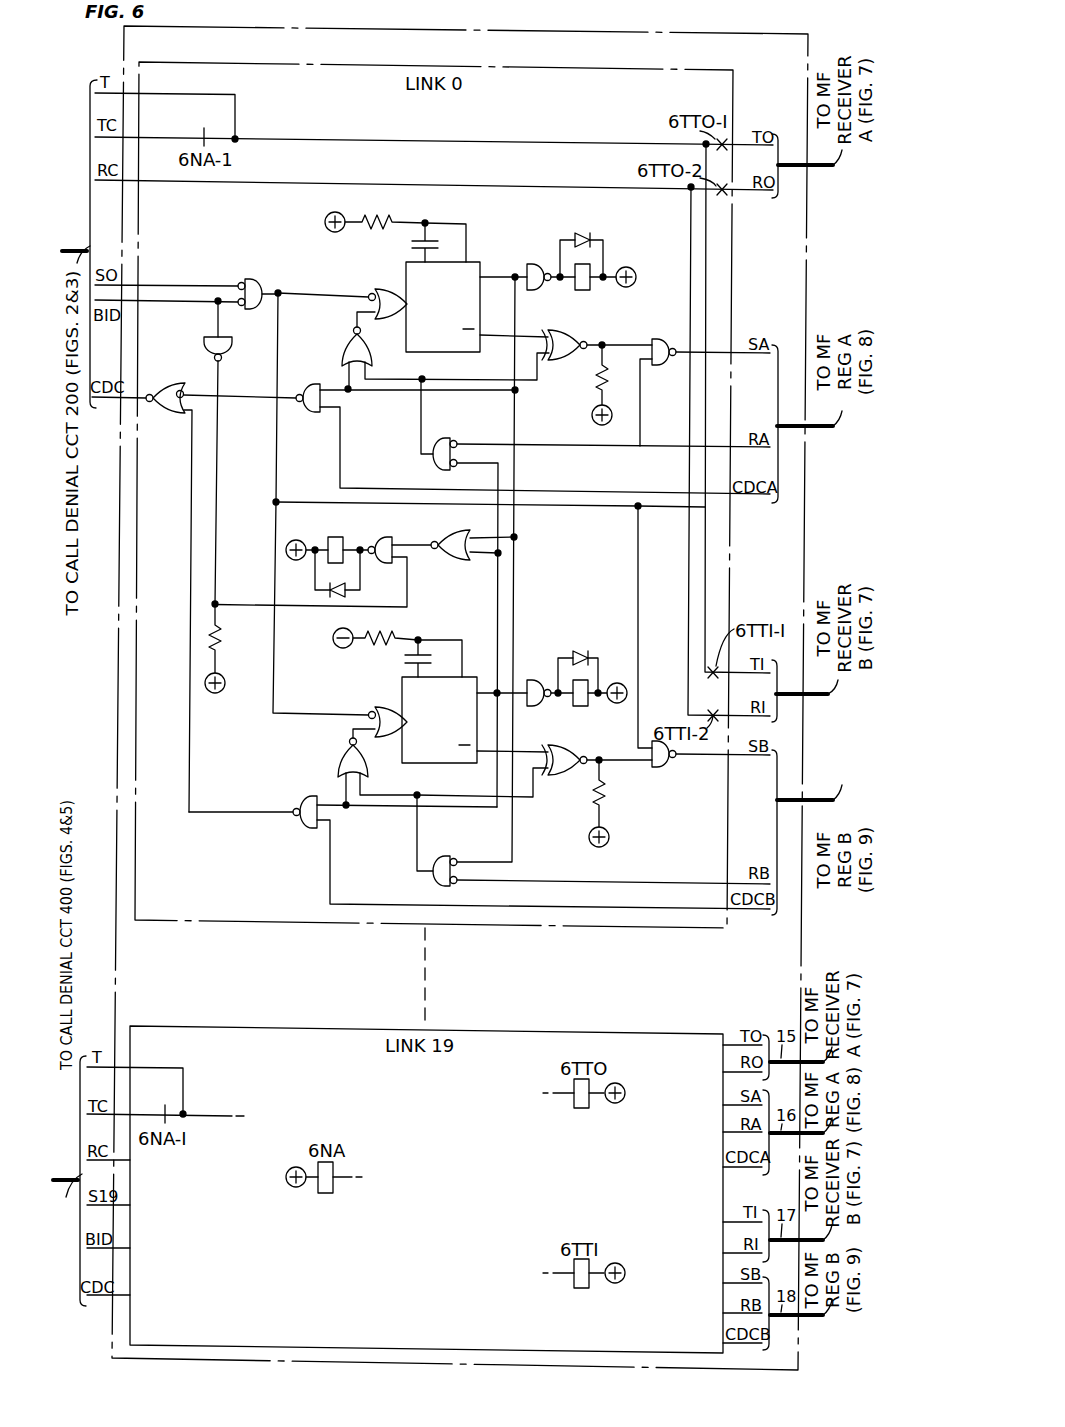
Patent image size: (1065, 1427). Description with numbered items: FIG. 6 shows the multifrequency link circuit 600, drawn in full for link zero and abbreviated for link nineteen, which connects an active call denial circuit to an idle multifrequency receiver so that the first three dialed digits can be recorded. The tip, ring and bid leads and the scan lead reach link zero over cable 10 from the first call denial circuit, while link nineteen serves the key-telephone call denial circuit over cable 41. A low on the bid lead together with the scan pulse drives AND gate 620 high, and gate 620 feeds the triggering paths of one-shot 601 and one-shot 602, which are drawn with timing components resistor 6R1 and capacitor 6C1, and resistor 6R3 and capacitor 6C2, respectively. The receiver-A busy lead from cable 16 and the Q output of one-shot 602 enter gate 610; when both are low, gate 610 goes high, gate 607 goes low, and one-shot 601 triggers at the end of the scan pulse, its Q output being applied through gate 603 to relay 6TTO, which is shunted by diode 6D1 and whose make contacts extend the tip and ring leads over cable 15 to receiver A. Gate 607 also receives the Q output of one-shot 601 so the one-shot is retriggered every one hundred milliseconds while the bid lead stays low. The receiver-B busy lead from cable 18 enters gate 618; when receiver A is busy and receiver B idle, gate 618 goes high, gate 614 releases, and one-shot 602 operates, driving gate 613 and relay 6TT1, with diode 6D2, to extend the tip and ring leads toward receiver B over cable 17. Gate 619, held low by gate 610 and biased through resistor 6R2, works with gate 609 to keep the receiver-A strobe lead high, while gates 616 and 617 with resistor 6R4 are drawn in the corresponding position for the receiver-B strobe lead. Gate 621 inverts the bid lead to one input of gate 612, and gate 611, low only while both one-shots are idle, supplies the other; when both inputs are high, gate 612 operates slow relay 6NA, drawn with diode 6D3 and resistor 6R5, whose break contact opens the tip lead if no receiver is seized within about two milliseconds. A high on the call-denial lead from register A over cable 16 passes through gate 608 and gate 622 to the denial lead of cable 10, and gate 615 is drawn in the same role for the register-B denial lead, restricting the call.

The multi frequency link 600 is at (654, 16).
The one-shot 601 is at (446, 352).
The one-shot 602 is at (437, 764).
The NAND gate 603 is at (536, 263).
The gate 607 is at (349, 339).
The gate 608 is at (311, 386).
The NAND gate 609 is at (665, 335).
The gate 610 is at (438, 468).
The gate 611 is at (455, 536).
The gate 612 is at (372, 537).
The NAND gate 613 is at (532, 679).
The gate 614 is at (338, 761).
The NAND gate 615 is at (305, 826).
The exclusive NOR gate 616 is at (575, 754).
The NAND gate 617 is at (665, 765).
The gate 618 is at (440, 858).
The gate 619 is at (575, 341).
The AND gate 620 is at (259, 280).
The gate 621 is at (205, 346).
The gate 622 is at (171, 413).
The cable 10 is at (79, 244).
The cable to call denial circuit 400 41 is at (69, 1181).
The cable 15 is at (790, 162).
The cable 16 is at (788, 423).
The cable to MF receiver B 17 is at (788, 692).
The cable 18 is at (788, 798).
The resistor 6R1 is at (368, 216).
The capacitor 6C1 is at (405, 244).
The diode 6D1 is at (581, 245).
The relay 6TTO is at (593, 290).
The resistor 6R2 is at (596, 372).
The relay 6NA is at (339, 535).
The diode 6D3 is at (347, 593).
The resistor 6R5 is at (225, 641).
The resistor 6R3 is at (397, 646).
The capacitor 6C2 is at (405, 656).
The diode 6D2 is at (573, 652).
The relay 6TT1 is at (589, 705).
The resistor 6R4 is at (608, 796).